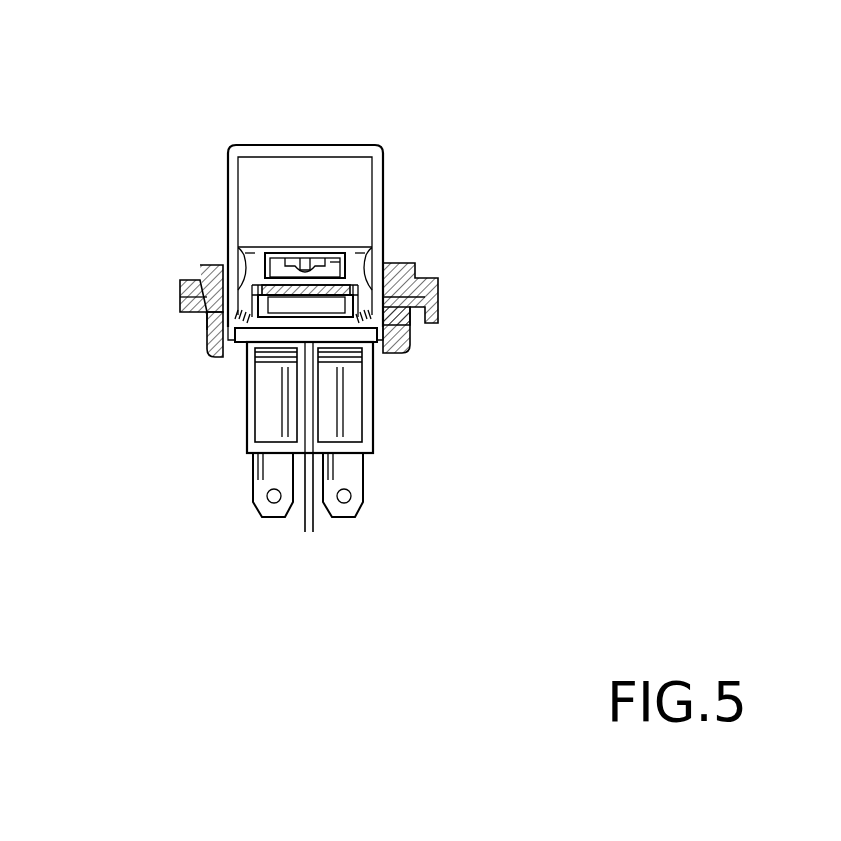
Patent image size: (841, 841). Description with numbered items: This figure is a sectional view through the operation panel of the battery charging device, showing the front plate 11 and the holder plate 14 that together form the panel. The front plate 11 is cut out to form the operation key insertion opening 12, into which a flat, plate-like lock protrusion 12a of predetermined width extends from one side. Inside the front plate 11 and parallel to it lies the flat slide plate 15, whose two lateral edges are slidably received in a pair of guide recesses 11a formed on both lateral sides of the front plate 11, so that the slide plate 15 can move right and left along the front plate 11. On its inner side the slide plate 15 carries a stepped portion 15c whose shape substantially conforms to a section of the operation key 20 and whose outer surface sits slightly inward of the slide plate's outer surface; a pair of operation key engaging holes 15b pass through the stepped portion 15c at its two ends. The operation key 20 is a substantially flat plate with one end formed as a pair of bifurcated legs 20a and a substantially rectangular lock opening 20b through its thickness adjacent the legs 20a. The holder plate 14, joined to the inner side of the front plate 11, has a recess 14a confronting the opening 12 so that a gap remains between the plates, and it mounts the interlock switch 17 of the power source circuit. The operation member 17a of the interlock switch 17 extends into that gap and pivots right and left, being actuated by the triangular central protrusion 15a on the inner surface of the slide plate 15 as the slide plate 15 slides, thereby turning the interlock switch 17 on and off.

The front plate 11 is at (407, 265).
The guide recesses 11a is at (222, 268).
The operation key insertion opening 12 is at (385, 260).
The lock protrusion 12a is at (317, 257).
The holder plate 14 is at (208, 340).
The recess 14a is at (385, 357).
The slide plate 15 is at (203, 313).
The central protrusion 15a is at (290, 297).
The operation key engaging holes 15b is at (362, 257).
The stepped portion 15c is at (337, 253).
The interlock switch 17 is at (372, 392).
The operation member 17a is at (373, 443).
The operation key 20 is at (240, 153).
The bifurcated legs 20a is at (217, 350).
The lock opening 20b is at (287, 257).